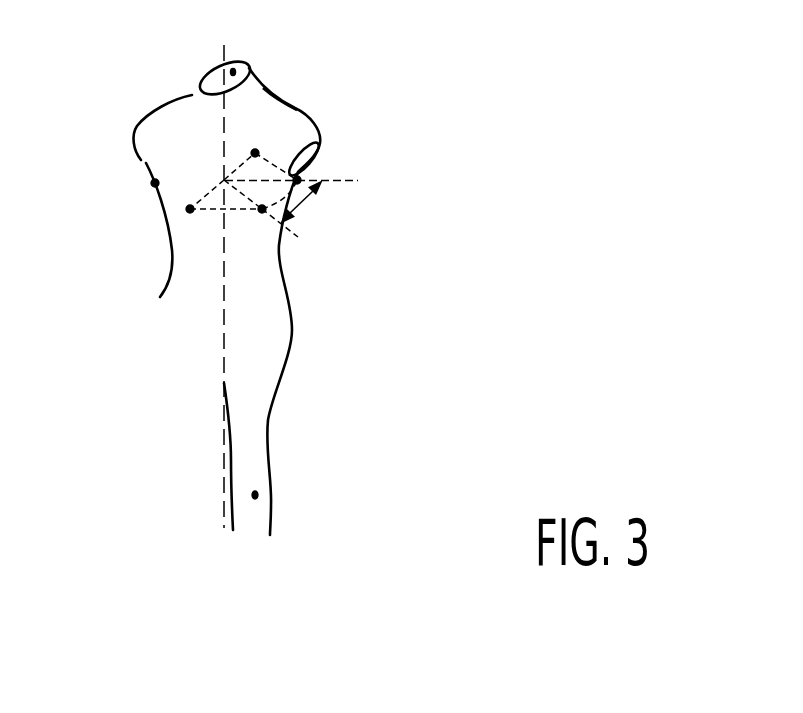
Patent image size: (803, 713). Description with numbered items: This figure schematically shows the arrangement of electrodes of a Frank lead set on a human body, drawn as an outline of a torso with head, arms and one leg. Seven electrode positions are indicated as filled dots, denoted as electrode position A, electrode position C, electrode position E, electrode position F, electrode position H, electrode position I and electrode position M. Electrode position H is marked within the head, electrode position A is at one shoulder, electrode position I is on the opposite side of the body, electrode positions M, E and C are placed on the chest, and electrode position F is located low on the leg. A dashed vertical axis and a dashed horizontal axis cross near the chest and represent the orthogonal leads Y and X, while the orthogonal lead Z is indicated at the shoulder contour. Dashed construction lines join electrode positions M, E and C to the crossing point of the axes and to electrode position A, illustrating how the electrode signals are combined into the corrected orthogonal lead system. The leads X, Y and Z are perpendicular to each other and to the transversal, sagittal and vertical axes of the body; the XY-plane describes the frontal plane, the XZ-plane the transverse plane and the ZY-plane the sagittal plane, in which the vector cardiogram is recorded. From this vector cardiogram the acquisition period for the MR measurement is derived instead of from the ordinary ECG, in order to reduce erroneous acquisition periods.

The electrode position H is at (233, 66).
The orthogonal lead Z is at (297, 110).
The electrode position A is at (300, 180).
The orthogonal lead X is at (303, 184).
The orthogonal lead Y is at (223, 302).
The electrode position M is at (258, 138).
The electrode position E is at (189, 194).
The electrode position C is at (259, 225).
The electrode position I is at (144, 189).
The electrode position F is at (259, 495).